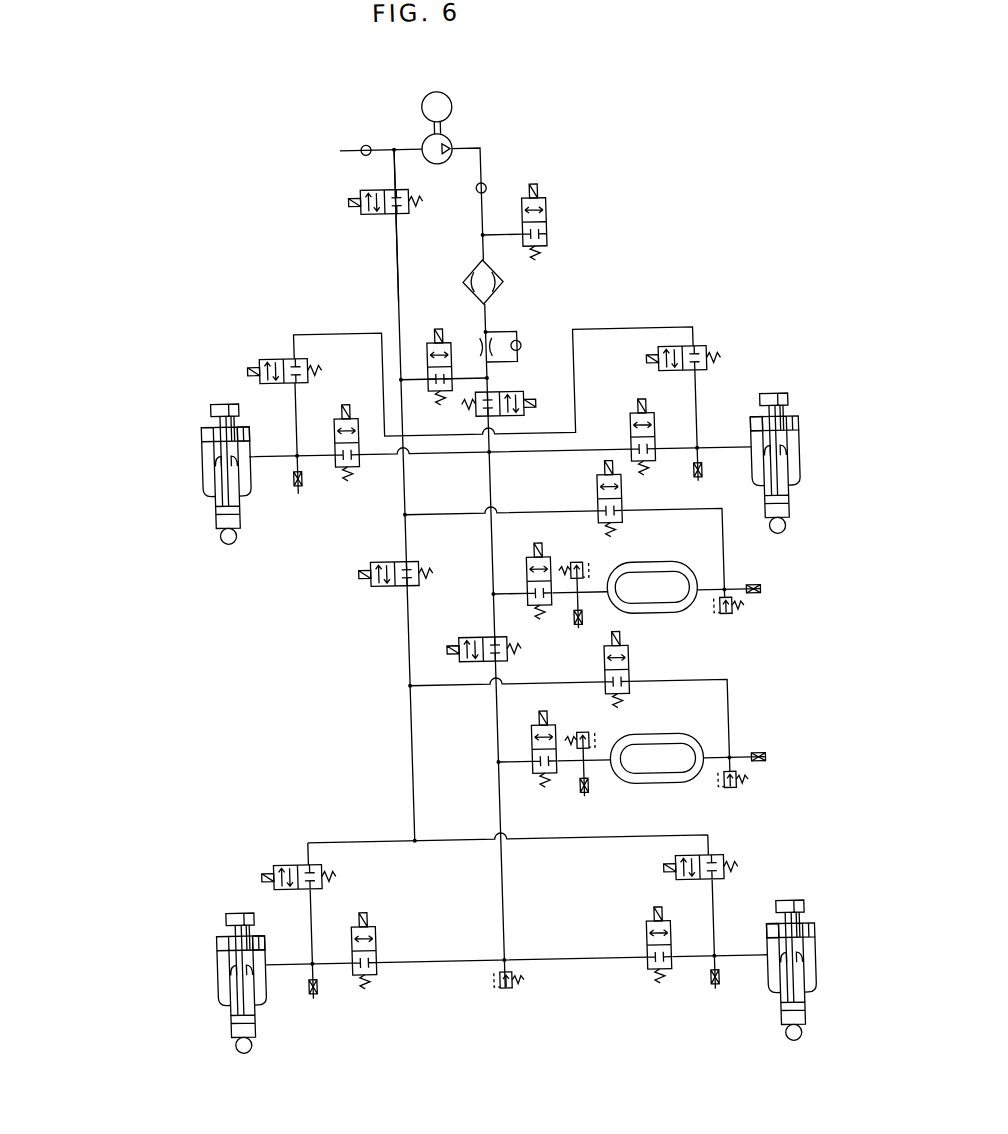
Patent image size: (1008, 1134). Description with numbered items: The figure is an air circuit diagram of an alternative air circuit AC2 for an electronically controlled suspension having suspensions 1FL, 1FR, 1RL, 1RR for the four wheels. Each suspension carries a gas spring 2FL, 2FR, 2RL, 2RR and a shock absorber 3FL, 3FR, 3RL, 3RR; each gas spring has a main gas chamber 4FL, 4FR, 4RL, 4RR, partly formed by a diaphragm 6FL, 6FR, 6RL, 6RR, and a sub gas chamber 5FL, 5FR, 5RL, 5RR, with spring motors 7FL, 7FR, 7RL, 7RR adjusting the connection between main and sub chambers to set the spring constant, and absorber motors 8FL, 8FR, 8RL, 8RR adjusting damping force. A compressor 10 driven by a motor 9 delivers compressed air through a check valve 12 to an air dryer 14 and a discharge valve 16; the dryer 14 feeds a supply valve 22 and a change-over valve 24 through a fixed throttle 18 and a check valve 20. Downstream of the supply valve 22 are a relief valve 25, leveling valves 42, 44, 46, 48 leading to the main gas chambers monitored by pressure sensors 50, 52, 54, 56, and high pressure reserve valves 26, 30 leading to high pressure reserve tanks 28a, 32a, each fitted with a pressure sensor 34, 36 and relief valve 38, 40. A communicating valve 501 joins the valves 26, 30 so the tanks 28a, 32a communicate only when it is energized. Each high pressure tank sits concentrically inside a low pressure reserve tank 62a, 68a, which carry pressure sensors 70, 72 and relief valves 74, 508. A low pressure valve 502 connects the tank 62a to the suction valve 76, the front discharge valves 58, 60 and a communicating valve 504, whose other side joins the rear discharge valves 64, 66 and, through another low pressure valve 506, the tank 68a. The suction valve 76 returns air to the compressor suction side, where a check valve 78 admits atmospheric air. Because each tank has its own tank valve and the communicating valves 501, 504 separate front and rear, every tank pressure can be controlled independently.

The motor 9 is at (463, 107).
The compressor 10 is at (459, 143).
The check valve 12 is at (495, 185).
The air dryer 14 is at (505, 290).
The discharge valve 16 is at (555, 214).
The fixed throttle 18 is at (483, 345).
The check valve 20 is at (524, 344).
The supply valve 22 is at (519, 392).
The change-over valve 24 is at (425, 346).
The relief valve 25 is at (492, 994).
The high pressure reserve valve 26 is at (538, 560).
The high pressure reserve tank 28a is at (629, 567).
The high pressure reserve valve 30 is at (526, 730).
The high pressure reserve tank 32a is at (634, 748).
The pressure sensor 34 is at (579, 618).
The pressure sensor 36 is at (580, 790).
The relief valve 38 is at (576, 563).
The relief valve 40 is at (580, 733).
The leveling valve 42 is at (336, 430).
The leveling valve 44 is at (632, 432).
The leveling valve 46 is at (362, 942).
The leveling valve 48 is at (633, 930).
The pressure sensor 50 is at (301, 485).
The pressure sensor 52 is at (699, 486).
The pressure sensor 54 is at (298, 995).
The pressure sensor 56 is at (700, 990).
The discharge valve 58 is at (278, 355).
The discharge valve 60 is at (700, 350).
The low pressure reserve tank 62a is at (688, 612).
The discharge valve 64 is at (310, 864).
The discharge valve 66 is at (705, 859).
The low pressure reserve tank 68a is at (678, 740).
The pressure sensor 70 is at (758, 592).
The pressure sensor 72 is at (753, 758).
The relief valve 74 is at (723, 618).
The suction valve 76 is at (372, 212).
The check valve 78 is at (371, 145).
The communicating valve 501 is at (464, 637).
The low pressure valve 502 is at (622, 498).
The communicating valve 504 is at (374, 560).
The low pressure valve 506 is at (624, 662).
The relief valve 508 is at (733, 790).
The air circuit AC2 is at (620, 283).
The suspension 1FL is at (222, 459).
The gas spring 2FL is at (248, 434).
The shock absorber 3FL is at (240, 509).
The main gas chamber 4FL is at (203, 461).
The sub gas chamber 5FL is at (203, 423).
The diaphragm 6FL is at (205, 478).
The spring motor 7FL is at (239, 402).
The absorber motor 8FL is at (216, 399).
The suspension 1FR is at (781, 432).
The gas spring 2FR is at (745, 428).
The shock absorber 3FR is at (789, 505).
The main gas chamber 4FR is at (800, 458).
The sub gas chamber 5FR is at (796, 423).
The diaphragm 6FR is at (790, 475).
The spring motor 7FR is at (784, 398).
The absorber motor 8FR is at (768, 398).
The suspension 1RL is at (245, 967).
The gas spring 2RL is at (249, 944).
The shock absorber 3RL is at (240, 1024).
The main gas chamber 4RL is at (203, 962).
The sub gas chamber 5RL is at (203, 936).
The diaphragm 6RL is at (208, 990).
The spring motor 7RL is at (239, 912).
The absorber motor 8RL is at (216, 908).
The suspension 1RR is at (795, 943).
The gas spring 2RR is at (746, 934).
The shock absorber 3RR is at (790, 1024).
The main gas chamber 4RR is at (801, 975).
The sub gas chamber 5RR is at (798, 930).
The diaphragm 6RR is at (791, 990).
The spring motor 7RR is at (786, 905).
The absorber motor 8RR is at (770, 905).